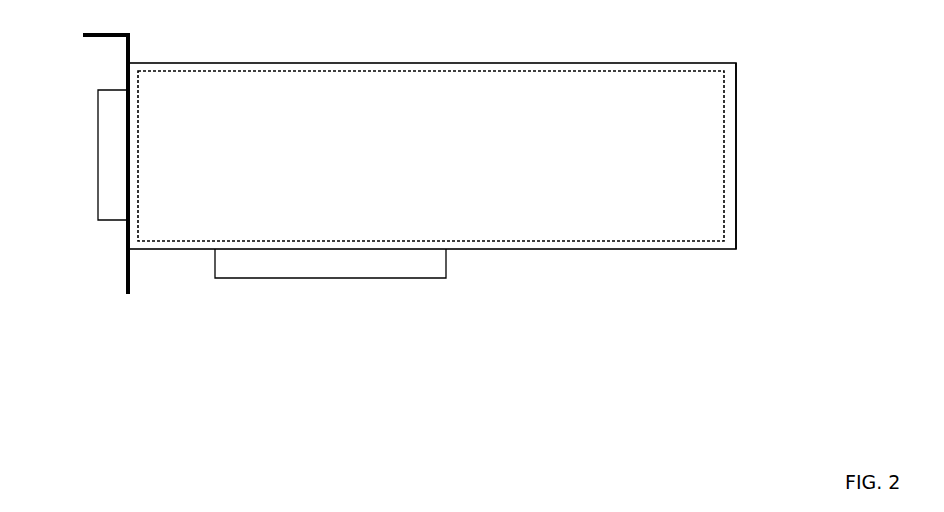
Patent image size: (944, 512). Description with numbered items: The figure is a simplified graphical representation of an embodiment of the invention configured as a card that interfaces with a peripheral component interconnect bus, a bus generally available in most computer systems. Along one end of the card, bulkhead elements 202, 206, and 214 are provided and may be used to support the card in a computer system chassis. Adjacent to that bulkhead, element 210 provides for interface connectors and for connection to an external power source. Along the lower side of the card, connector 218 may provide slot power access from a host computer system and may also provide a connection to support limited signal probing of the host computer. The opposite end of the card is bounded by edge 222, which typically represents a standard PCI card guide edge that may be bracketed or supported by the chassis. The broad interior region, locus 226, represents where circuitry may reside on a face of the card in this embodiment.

The bulkhead element 202 is at (82, 38).
The bulkhead element 206 is at (127, 70).
The interface connector element 210 is at (97, 132).
The bulkhead element 214 is at (126, 270).
The connector 218 is at (446, 265).
The edge 222 is at (736, 158).
The locus 226 is at (420, 70).